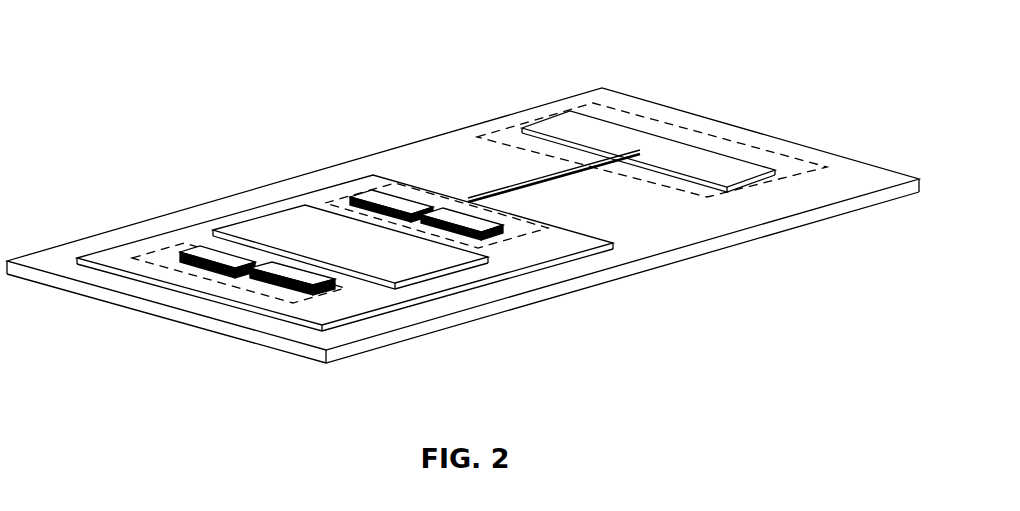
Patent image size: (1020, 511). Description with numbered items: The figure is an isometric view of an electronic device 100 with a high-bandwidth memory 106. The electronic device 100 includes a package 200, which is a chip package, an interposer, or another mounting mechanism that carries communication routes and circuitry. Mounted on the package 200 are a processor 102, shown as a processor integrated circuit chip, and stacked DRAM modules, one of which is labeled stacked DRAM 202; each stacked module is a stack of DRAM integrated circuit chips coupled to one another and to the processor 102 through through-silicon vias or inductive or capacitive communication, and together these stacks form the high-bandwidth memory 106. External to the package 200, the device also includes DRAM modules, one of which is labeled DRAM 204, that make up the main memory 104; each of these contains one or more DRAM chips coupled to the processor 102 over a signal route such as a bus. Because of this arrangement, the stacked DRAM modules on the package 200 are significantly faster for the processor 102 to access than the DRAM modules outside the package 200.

The electronic device 100 is at (723, 220).
The processor 102 is at (423, 257).
The main memory 104 is at (723, 140).
The high-bandwidth memory 106 is at (173, 250).
The package 200 is at (187, 288).
The stacked DRAM 202 is at (218, 250).
The DRAM 204 is at (588, 132).